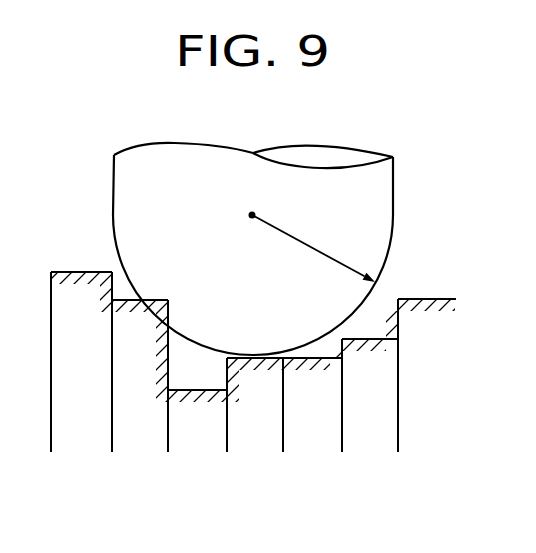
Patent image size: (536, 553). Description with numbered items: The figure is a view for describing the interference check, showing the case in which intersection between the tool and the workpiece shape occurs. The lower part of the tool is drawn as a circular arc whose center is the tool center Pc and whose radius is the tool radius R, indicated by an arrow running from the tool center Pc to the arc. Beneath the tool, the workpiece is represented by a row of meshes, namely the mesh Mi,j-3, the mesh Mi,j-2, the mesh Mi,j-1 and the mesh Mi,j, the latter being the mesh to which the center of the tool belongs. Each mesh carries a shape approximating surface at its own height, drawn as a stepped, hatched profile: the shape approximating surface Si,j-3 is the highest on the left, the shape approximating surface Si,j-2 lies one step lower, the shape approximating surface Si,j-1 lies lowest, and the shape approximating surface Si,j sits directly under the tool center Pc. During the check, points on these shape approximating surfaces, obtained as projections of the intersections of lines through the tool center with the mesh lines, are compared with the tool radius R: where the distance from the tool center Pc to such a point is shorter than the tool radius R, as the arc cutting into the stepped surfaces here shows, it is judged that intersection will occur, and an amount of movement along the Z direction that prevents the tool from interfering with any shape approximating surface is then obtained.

The tool center Pc is at (249, 201).
The tool radius R is at (313, 248).
The shape approximating surface Si,j-3 is at (77, 272).
The shape approximating surface Si,j-2 is at (152, 300).
The shape approximating surface Si,j-1 is at (203, 390).
The shape approximating surface Si,j is at (258, 358).
The mesh Mi,j-3 is at (74, 381).
The mesh Mi,j-2 is at (132, 381).
The mesh Mi,j-1 is at (188, 395).
The mesh Mi,j is at (248, 424).